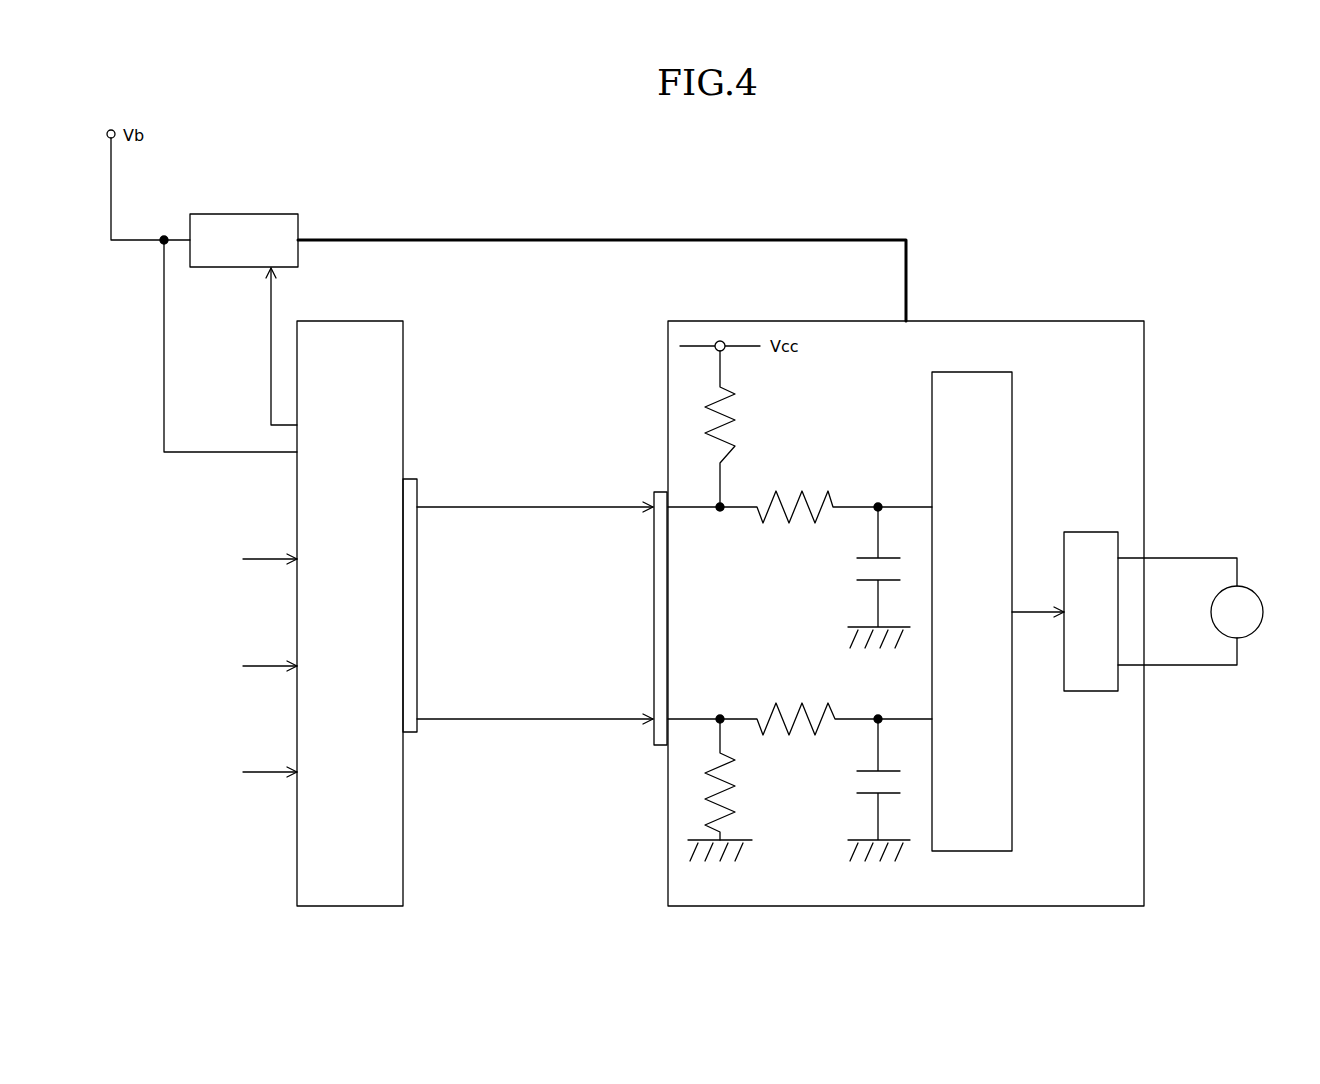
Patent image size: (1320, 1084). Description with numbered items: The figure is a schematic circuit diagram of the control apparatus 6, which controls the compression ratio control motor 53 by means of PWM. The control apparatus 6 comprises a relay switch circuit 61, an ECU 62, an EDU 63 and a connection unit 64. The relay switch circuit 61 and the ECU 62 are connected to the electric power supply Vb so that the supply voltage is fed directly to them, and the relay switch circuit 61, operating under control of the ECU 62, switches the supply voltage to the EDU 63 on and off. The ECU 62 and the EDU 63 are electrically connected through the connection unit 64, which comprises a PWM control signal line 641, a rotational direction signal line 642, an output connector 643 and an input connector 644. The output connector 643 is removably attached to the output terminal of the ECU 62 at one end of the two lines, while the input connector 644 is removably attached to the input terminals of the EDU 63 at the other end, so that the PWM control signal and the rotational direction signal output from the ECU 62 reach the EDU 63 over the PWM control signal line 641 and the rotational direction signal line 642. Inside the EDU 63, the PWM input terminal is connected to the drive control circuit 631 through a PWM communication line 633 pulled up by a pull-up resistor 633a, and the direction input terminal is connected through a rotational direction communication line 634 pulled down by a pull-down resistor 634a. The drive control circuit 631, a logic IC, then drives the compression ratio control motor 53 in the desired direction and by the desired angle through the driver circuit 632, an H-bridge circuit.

The control apparatus 6 is at (1237, 147).
The relay switch circuit 61 is at (243, 213).
The ECU 62 is at (403, 356).
The EDU 63 is at (1144, 333).
The drive control circuit 631 is at (1012, 412).
The driver circuit 632 is at (1092, 692).
The PWM communication line 633 is at (905, 505).
The pull-up resistor 633a is at (730, 430).
The rotational direction communication line 634 is at (740, 716).
The pull-down resistor 634a is at (730, 798).
The PWM control signal line 641 is at (527, 506).
The rotational direction signal line 642 is at (522, 721).
The output connector 643 is at (410, 478).
The input connector 644 is at (660, 491).
The connection unit 64 is at (578, 757).
The compression ratio control motor 53 is at (1263, 612).